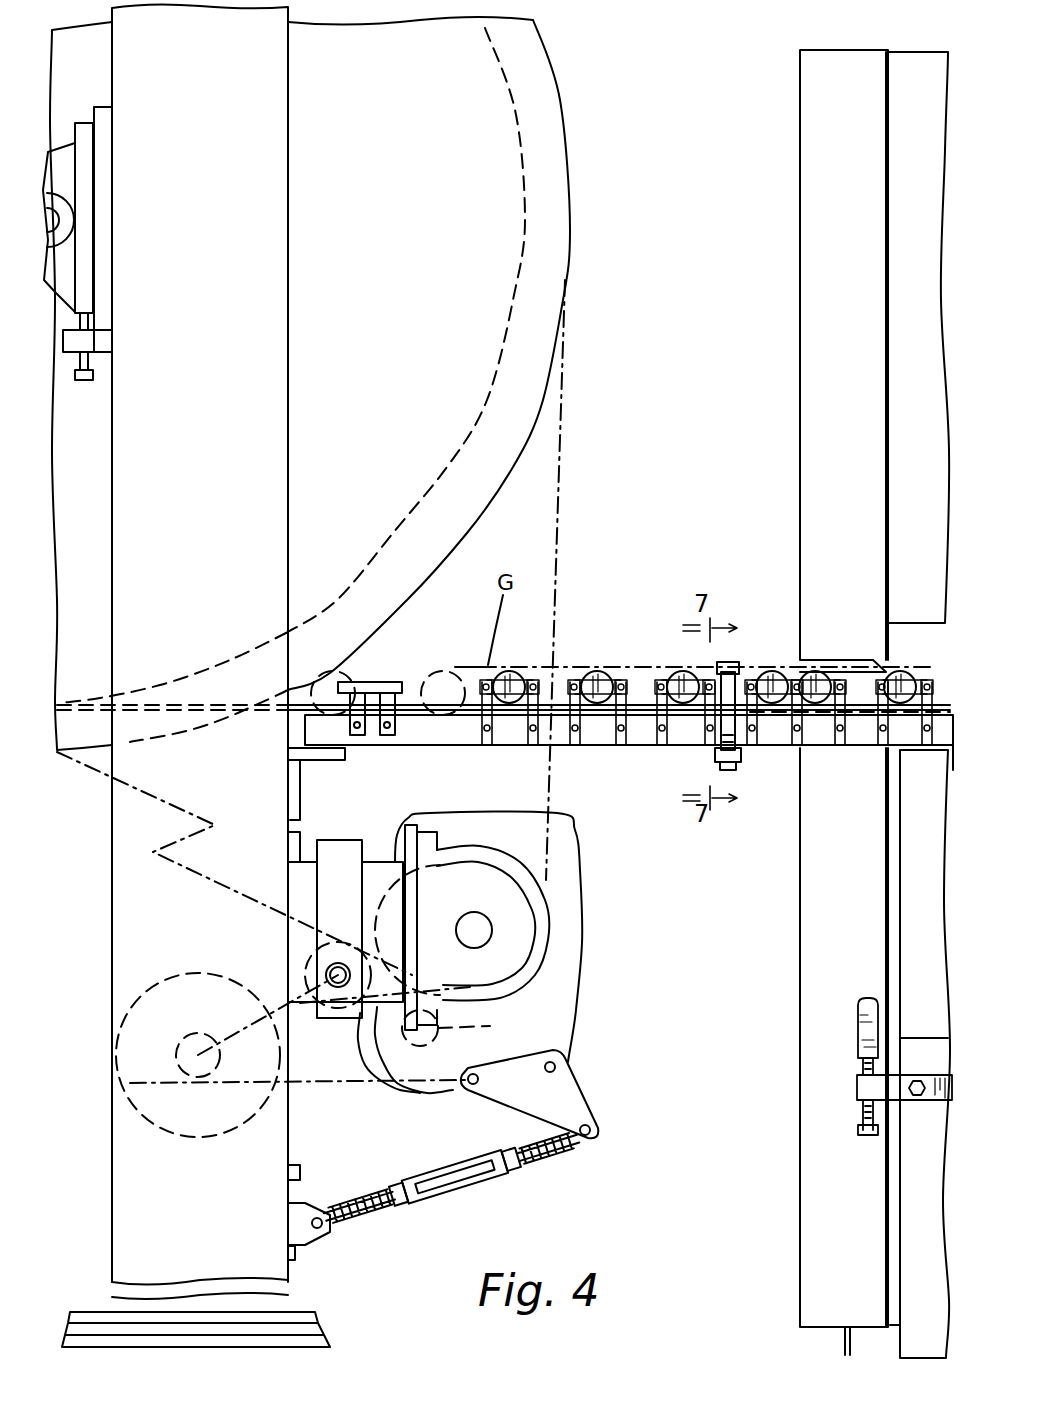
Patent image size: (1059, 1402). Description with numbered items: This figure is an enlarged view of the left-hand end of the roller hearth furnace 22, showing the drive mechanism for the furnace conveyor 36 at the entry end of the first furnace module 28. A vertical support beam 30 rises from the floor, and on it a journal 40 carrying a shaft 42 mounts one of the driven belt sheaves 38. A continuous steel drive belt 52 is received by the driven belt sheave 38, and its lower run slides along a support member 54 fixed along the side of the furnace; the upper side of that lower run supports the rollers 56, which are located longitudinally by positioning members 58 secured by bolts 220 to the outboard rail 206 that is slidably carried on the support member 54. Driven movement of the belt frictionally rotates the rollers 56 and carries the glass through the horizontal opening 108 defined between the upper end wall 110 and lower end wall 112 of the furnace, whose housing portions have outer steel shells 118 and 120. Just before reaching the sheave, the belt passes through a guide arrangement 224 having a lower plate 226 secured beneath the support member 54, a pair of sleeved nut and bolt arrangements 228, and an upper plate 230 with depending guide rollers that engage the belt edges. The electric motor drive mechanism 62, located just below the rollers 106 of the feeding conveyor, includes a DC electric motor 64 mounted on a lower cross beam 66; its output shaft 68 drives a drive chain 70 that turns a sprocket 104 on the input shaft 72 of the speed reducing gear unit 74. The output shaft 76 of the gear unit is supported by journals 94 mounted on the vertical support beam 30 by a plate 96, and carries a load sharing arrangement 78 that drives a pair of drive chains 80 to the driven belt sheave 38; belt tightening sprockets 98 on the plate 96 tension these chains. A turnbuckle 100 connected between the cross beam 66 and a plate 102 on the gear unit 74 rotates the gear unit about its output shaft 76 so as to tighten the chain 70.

The roller hearth furnace 22 is at (797, 36).
The furnace module 28 is at (785, 100).
The vertical support beam 30 is at (290, 506).
The conveyor 36 is at (572, 50).
The driven belt sheave 38 is at (530, 118).
The journal 40 is at (62, 150).
The shaft 42 is at (55, 220).
The drive belt 52 is at (402, 700).
The support member 54 is at (632, 703).
The roller 56 is at (598, 670).
The positioning member 58 is at (505, 740).
The electric motor drive mechanism 62 is at (528, 941).
The DC electric motor 64 is at (205, 1137).
The lower cross beam 66 is at (295, 1258).
The output shaft 68 is at (196, 1050).
The drive chain 70 is at (328, 1085).
The input shaft 72 is at (463, 1028).
The speed reducing gear unit 74 is at (568, 890).
The output shaft 76 is at (480, 935).
The load sharing arrangement 78 is at (542, 984).
The drive chain 80 is at (551, 830).
The journal 94 is at (430, 855).
The plate 96 is at (372, 870).
The belt tightening sprocket 98 is at (305, 975).
The turnbuckle 100 is at (498, 1186).
The plate 102 is at (578, 1100).
The sprocket 104 is at (383, 1082).
The roller 106 is at (326, 690).
The horizontal opening 108 is at (795, 665).
The upper end wall 110 is at (800, 362).
The lower end wall 112 is at (800, 927).
The outer steel shell 118 is at (900, 862).
The outer steel shell 120 is at (918, 72).
The rail 206 is at (410, 747).
The bolt 220 is at (565, 748).
The guide arrangement 224 is at (735, 738).
The lower plate 226 is at (735, 762).
The sleeved nut and bolt arrangement 228 is at (738, 690).
The upper plate 230 is at (718, 668).